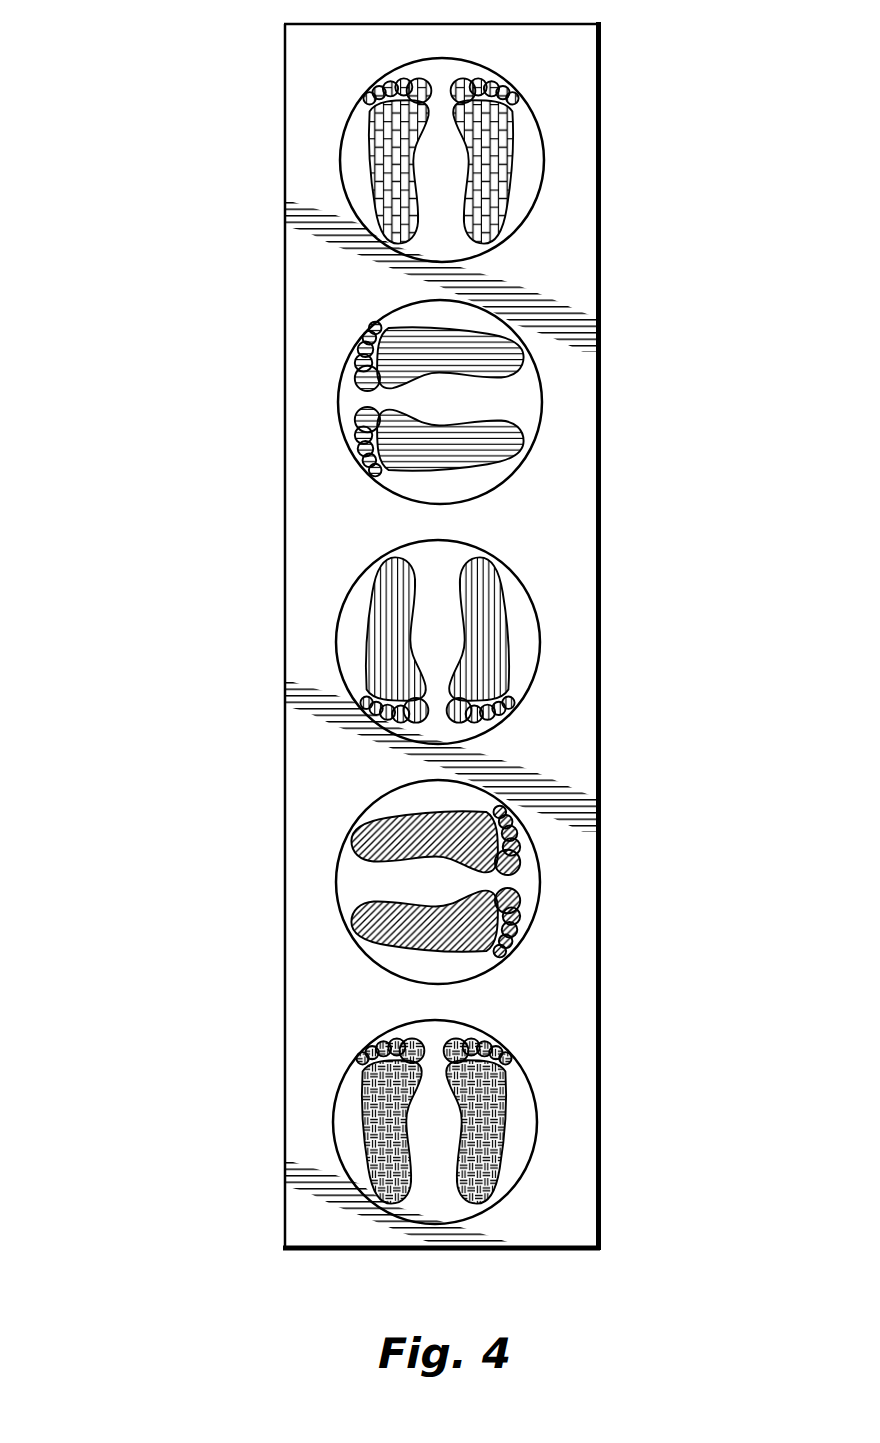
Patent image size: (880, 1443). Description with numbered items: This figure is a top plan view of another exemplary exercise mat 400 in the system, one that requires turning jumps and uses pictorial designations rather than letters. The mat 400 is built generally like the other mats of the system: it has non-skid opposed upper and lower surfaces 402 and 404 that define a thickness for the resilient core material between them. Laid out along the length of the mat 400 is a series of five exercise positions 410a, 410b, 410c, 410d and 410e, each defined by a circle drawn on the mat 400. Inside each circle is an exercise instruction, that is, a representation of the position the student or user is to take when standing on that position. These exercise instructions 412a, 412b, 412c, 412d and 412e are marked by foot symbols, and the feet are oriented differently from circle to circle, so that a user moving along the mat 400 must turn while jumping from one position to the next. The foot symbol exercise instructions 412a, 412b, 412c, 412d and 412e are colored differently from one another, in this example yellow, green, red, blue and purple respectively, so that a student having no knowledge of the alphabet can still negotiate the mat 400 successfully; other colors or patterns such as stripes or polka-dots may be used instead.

The exercise mat 400 is at (190, 1095).
The upper surface 402 is at (300, 645).
The lower surface 404 is at (300, 757).
The exercise position 410a is at (536, 1141).
The exercise position 410b is at (539, 901).
The exercise position 410c is at (539, 661).
The exercise position 410d is at (541, 421).
The exercise position 410e is at (543, 178).
The exercise instruction 412a is at (470, 1033).
The exercise instruction 412b is at (377, 927).
The exercise instruction 412c is at (470, 560).
The exercise instruction 412d is at (360, 353).
The exercise instruction 412e is at (473, 252).